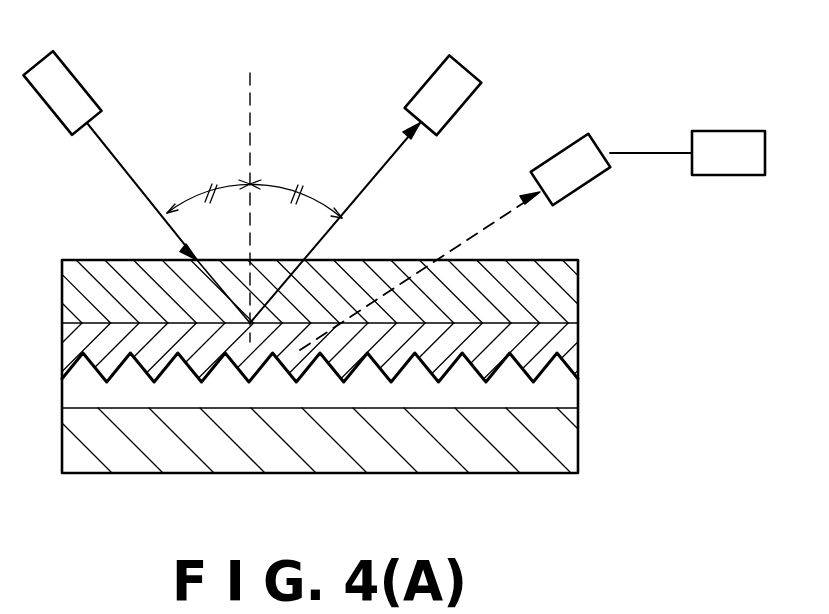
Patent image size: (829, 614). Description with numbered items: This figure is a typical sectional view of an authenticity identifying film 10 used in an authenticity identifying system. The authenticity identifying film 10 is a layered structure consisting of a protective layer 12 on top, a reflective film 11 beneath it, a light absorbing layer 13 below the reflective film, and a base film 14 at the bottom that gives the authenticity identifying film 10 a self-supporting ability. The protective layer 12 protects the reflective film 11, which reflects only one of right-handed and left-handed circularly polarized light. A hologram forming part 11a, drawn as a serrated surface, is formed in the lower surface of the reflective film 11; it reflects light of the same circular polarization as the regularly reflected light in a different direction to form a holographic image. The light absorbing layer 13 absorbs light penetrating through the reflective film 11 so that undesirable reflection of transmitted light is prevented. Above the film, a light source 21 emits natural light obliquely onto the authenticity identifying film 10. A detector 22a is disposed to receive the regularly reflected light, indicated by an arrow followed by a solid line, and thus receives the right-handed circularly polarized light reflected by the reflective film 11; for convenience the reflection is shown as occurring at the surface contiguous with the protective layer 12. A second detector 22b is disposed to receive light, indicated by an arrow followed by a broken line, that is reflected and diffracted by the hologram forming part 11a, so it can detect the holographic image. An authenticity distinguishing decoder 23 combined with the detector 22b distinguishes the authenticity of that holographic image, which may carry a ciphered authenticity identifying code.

The authenticity identifying film 10 is at (695, 257).
The reflective film 11 is at (570, 340).
The hologram forming part 11a is at (535, 375).
The protective layer 12 is at (570, 282).
The light absorbing layer 13 is at (560, 404).
The base film 14 is at (560, 458).
The light source 21 is at (75, 95).
The detector 22a is at (433, 88).
The detector 22b is at (572, 155).
The authenticity distinguishing decoder 23 is at (727, 140).